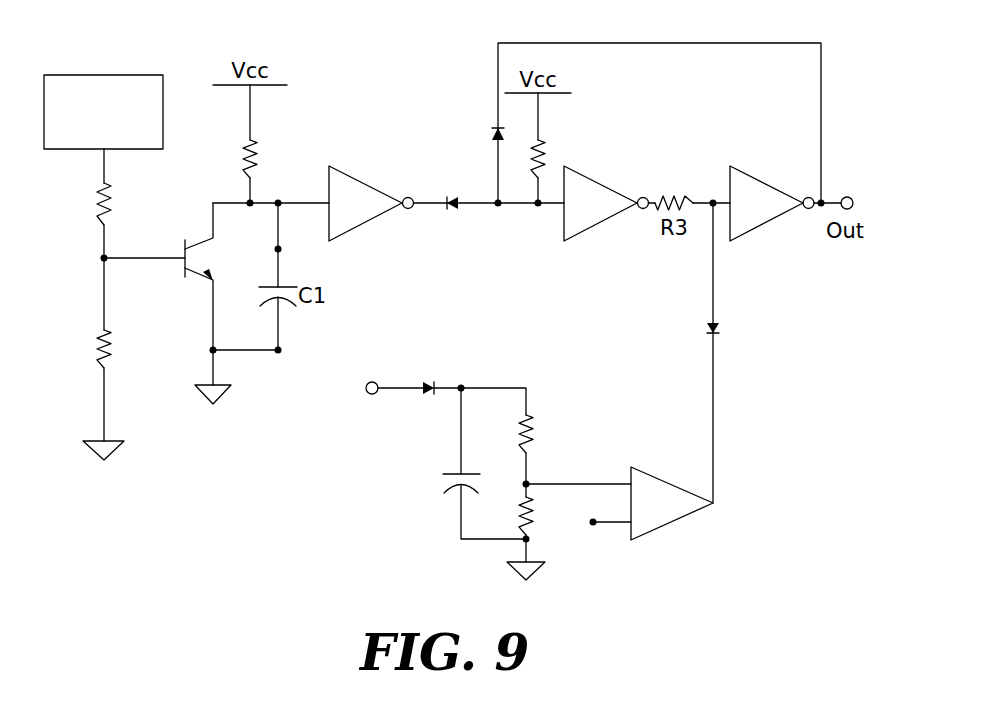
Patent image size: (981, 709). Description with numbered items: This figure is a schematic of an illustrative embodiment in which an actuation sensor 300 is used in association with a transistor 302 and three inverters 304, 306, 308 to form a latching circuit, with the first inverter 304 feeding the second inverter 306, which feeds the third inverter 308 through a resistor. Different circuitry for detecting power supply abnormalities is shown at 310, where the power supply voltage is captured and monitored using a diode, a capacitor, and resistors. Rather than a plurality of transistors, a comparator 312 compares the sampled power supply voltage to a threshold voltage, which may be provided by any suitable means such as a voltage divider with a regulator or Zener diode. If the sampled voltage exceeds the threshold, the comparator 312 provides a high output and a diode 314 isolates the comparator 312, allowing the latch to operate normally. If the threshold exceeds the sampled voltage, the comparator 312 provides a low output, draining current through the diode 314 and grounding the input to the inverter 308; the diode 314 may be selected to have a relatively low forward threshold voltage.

The actuation sensor 300 is at (135, 79).
The transistor 302 is at (199, 279).
The inverter 304 is at (352, 176).
The inverter 306 is at (593, 198).
The inverter 308 is at (740, 170).
The circuitry for detecting power supply abnormalities 310 is at (535, 338).
The comparator 312 is at (653, 532).
The diode 314 is at (710, 333).